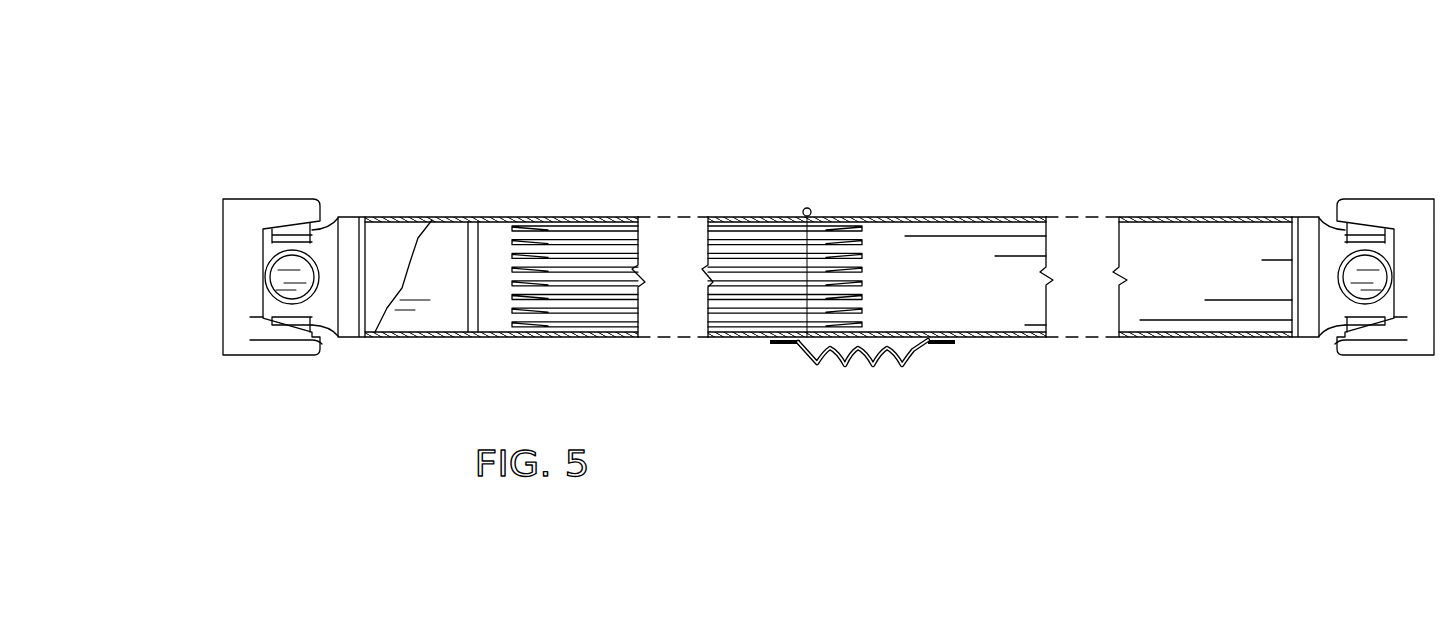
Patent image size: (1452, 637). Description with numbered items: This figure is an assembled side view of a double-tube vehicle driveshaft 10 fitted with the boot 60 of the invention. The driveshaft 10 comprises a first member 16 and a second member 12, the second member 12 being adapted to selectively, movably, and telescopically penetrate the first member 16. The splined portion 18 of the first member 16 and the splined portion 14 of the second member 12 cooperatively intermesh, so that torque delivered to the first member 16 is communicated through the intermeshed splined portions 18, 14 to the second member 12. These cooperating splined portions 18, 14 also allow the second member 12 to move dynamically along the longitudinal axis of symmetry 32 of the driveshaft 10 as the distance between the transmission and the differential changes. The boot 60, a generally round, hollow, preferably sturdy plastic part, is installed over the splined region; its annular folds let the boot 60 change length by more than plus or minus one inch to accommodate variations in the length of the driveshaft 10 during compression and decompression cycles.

The driveshaft 10 is at (1180, 136).
The second member 12 is at (1012, 340).
The splined portion of the second member 14 is at (828, 298).
The first member 16 is at (540, 340).
The splined portion of the first member 18 is at (790, 340).
The longitudinal axis of symmetry 32 is at (212, 277).
The boot 60 is at (869, 372).